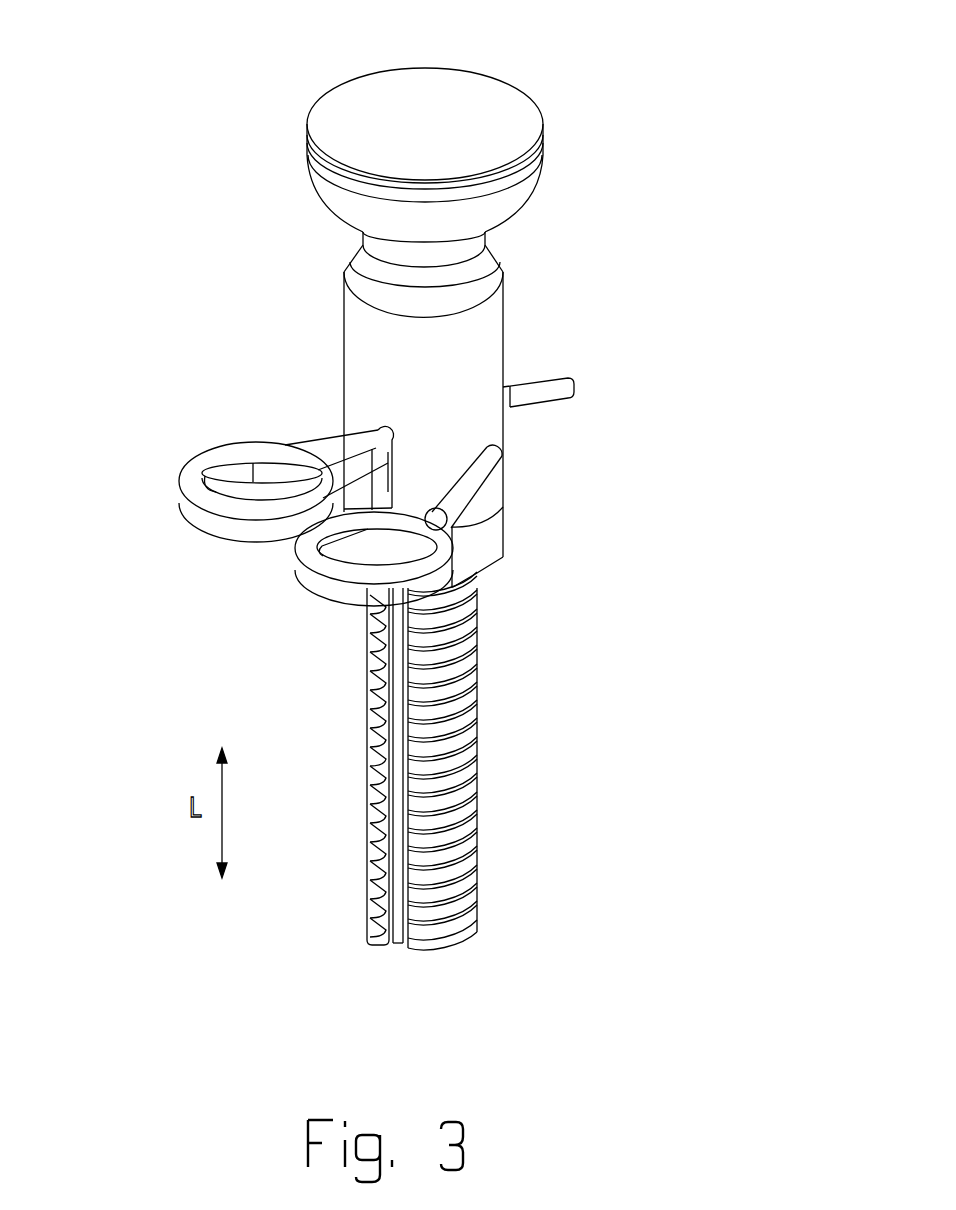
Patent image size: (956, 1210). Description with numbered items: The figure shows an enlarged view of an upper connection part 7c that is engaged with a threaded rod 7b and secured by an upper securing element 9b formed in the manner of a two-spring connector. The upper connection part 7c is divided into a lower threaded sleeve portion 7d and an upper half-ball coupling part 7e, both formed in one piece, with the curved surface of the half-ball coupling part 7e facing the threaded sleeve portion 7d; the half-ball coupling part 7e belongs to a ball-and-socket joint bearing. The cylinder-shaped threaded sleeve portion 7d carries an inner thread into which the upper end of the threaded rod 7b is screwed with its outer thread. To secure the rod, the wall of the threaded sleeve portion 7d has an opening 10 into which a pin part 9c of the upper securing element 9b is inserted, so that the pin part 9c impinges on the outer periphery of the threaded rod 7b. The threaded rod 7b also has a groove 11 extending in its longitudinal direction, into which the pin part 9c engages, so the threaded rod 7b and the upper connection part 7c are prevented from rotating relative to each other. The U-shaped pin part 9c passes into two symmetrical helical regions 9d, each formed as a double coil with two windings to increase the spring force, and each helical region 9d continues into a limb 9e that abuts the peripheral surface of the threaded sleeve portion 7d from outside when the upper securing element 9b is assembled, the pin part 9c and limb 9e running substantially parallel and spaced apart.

The threaded rod 7b is at (450, 706).
The upper connection part 7c is at (493, 123).
The threaded sleeve portion 7d is at (451, 352).
The half-ball coupling part 7e is at (424, 122).
The upper securing element 9b is at (365, 481).
The pin part 9c is at (345, 465).
The helical regions 9d is at (197, 468).
The limb 9e is at (467, 483).
The opening 10 is at (383, 498).
The groove 11 is at (398, 765).